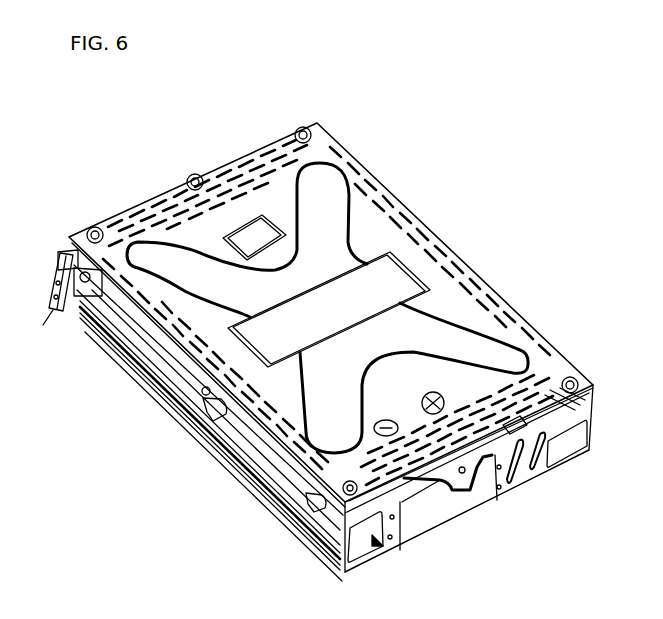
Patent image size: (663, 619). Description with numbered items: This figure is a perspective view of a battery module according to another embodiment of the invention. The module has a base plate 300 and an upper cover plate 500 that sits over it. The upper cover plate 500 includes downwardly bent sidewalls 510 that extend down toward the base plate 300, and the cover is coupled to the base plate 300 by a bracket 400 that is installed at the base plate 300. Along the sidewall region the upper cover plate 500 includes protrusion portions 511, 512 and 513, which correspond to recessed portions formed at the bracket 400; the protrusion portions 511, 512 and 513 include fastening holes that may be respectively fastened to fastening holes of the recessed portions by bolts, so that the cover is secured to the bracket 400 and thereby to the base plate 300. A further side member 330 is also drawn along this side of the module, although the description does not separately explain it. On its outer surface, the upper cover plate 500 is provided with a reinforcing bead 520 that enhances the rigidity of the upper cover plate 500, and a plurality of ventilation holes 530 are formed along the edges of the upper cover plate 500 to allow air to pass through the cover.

The base plate 300 is at (491, 509).
The side rail bracket 330 is at (150, 385).
The bracket 400 is at (196, 428).
The upper cover plate 500 is at (331, 315).
The downwardly bent sidewalls 510 is at (203, 424).
The protrusion portion 511 is at (88, 311).
The protrusion portion 512 is at (217, 433).
The protrusion portion 513 is at (323, 492).
The reinforcing bead 520 is at (423, 327).
The ventilation holes 530 is at (513, 327).